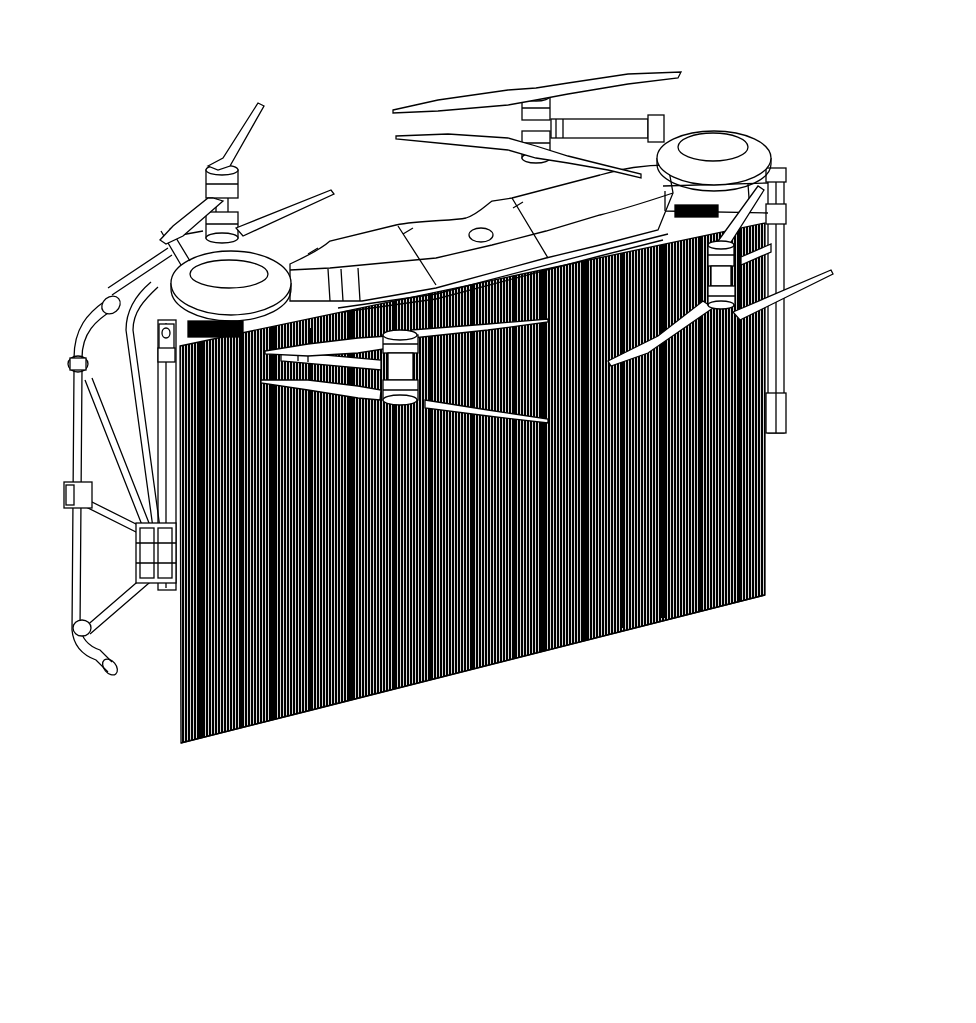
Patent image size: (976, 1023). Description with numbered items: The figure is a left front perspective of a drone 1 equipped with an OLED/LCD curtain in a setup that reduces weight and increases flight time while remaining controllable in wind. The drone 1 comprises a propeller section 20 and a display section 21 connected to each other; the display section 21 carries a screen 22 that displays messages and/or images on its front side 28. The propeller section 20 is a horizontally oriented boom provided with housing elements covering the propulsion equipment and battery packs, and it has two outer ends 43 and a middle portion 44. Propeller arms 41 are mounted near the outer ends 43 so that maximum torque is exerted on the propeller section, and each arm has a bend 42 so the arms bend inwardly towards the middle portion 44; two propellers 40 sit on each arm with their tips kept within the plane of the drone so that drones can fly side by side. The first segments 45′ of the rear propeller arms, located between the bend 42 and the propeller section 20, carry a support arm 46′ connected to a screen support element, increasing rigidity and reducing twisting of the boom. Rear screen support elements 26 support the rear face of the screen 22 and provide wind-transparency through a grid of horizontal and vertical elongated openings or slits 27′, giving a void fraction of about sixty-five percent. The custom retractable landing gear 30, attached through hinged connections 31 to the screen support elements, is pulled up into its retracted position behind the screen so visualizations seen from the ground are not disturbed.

The drone 1 is at (583, 700).
The propeller section 20 is at (780, 102).
The display section 21 is at (515, 656).
The screen 22 is at (313, 640).
The rear screen support elements 26 is at (665, 597).
The elongated openings and/or slits 27′ is at (232, 720).
The front side of the screen 28 is at (609, 582).
The retractable landing gear 30 is at (81, 650).
The hinged connections 31 is at (152, 576).
The propellers 40 is at (438, 128).
The propeller arm 41 is at (591, 105).
The bend 42 is at (646, 112).
The outer ends of the propeller section 43 is at (153, 297).
The middle portion of the propeller section 44 is at (412, 203).
The first segment of the rear face propeller arm 45′ is at (158, 237).
The support arm 46′ is at (142, 297).